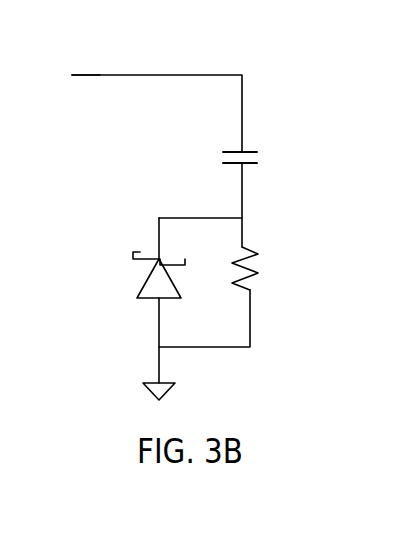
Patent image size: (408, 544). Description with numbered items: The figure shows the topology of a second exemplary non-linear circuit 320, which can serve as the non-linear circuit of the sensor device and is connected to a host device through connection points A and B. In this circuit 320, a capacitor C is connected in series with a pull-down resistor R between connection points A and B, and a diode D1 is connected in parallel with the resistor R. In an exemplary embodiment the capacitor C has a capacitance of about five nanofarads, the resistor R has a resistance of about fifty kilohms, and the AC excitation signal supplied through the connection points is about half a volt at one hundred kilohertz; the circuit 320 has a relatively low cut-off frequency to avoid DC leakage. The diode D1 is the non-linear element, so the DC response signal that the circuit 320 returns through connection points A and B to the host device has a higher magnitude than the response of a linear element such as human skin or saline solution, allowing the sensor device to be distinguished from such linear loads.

The second exemplary non-linear circuit 320 is at (123, 53).
The connection point A is at (74, 74).
The connection point B is at (146, 393).
The capacitor C is at (253, 160).
The pull-down resistor R is at (259, 268).
The diode D1 is at (138, 275).